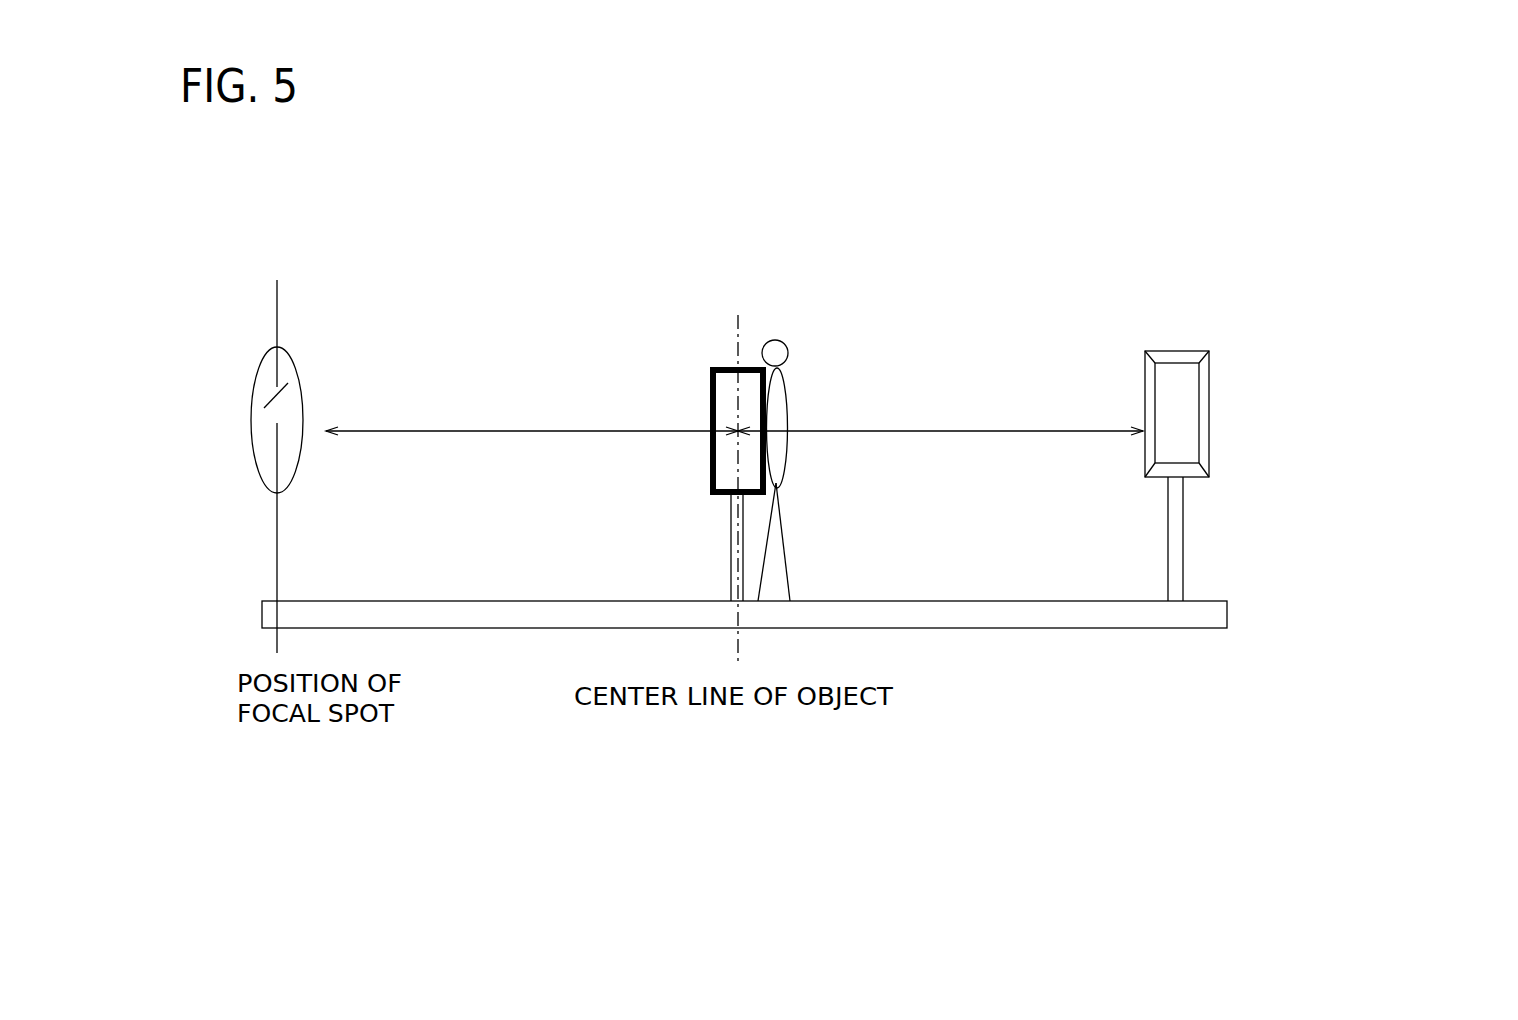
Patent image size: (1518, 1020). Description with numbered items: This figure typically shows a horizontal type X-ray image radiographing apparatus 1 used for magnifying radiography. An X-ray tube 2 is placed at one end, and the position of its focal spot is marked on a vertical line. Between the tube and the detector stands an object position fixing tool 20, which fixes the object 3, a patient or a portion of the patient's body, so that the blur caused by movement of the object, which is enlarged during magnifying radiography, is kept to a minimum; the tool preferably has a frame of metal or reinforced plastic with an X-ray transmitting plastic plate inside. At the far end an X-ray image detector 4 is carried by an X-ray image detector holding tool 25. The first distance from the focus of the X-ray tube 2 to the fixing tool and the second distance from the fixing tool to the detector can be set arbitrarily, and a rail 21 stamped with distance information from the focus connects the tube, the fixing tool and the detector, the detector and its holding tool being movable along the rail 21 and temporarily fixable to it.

The X-ray image radiographing apparatus 1 is at (479, 245).
The X-ray tube 2 is at (258, 363).
The object 3 is at (787, 392).
The X-ray image detector 4 is at (1167, 373).
The object position fixing tool 20 is at (718, 367).
The rail 21 is at (1218, 617).
The X-ray image detector holding tool 25 is at (1209, 383).